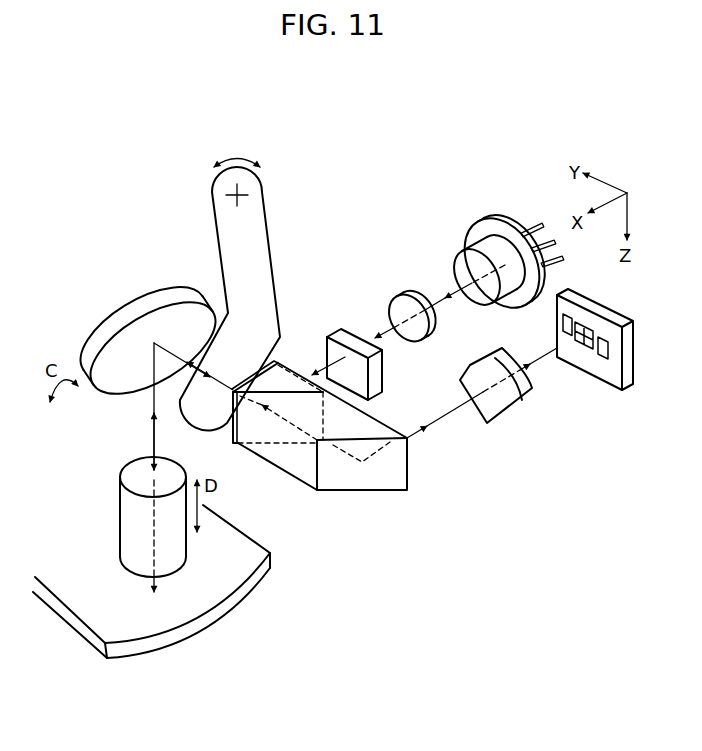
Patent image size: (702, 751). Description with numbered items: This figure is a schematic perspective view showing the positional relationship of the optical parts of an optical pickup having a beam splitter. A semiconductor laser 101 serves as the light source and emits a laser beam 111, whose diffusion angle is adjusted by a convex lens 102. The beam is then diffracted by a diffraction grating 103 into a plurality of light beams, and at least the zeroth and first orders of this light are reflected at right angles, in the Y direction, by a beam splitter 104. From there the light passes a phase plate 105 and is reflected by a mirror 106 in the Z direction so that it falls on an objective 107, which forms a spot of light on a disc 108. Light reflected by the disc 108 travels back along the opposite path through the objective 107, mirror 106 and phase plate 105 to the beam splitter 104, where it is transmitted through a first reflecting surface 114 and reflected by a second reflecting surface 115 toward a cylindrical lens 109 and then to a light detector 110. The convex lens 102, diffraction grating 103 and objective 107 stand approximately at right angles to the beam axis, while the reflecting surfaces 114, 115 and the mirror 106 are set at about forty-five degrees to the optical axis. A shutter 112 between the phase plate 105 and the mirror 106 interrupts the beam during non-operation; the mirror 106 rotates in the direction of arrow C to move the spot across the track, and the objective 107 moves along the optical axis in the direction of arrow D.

The semiconductor laser 101 is at (485, 225).
The convex lens 102 is at (408, 293).
The diffraction grating 103 is at (353, 338).
The beam splitter 104 is at (308, 378).
The phase plate 105 is at (275, 365).
The mirror 106 is at (163, 300).
The objective 107 is at (125, 518).
The disc 108 is at (252, 568).
The cylindrical lens 109 is at (497, 415).
The light detector 110 is at (612, 379).
The laser beam 111 is at (440, 297).
The shutter 112 is at (262, 193).
The first reflecting surface 114 is at (308, 392).
The second reflecting surface 115 is at (375, 483).